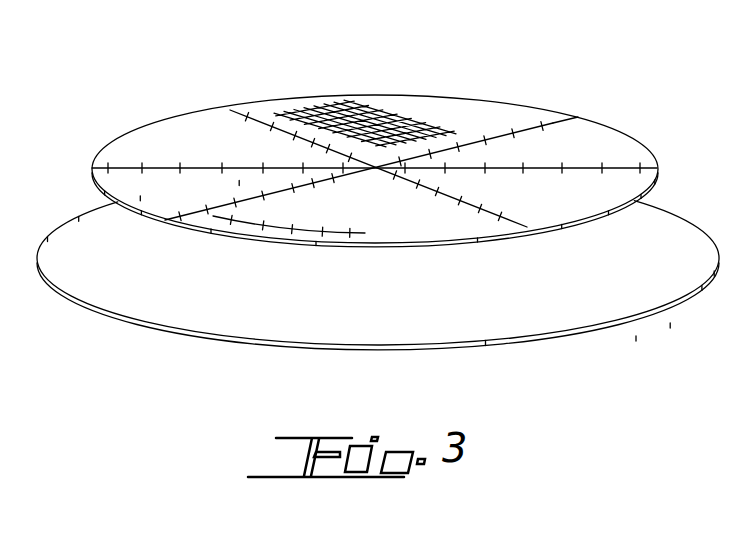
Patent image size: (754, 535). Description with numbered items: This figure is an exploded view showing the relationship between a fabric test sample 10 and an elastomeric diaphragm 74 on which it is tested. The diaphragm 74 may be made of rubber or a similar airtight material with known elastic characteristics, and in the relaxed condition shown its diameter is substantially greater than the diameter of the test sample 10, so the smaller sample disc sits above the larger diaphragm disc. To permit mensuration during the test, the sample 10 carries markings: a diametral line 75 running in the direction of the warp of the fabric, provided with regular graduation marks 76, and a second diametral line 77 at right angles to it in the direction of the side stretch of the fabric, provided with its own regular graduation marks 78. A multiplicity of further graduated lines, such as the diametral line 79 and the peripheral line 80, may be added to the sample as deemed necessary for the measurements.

The test sample 10 is at (165, 128).
The elastomeric diaphragm 74 is at (78, 250).
The diametral line 75 is at (553, 123).
The graduation marks 76 is at (513, 133).
The second diametral line 77 is at (243, 117).
The graduation marks 78 is at (270, 125).
The diametral line 79 is at (125, 167).
The peripheral line 80 is at (302, 228).